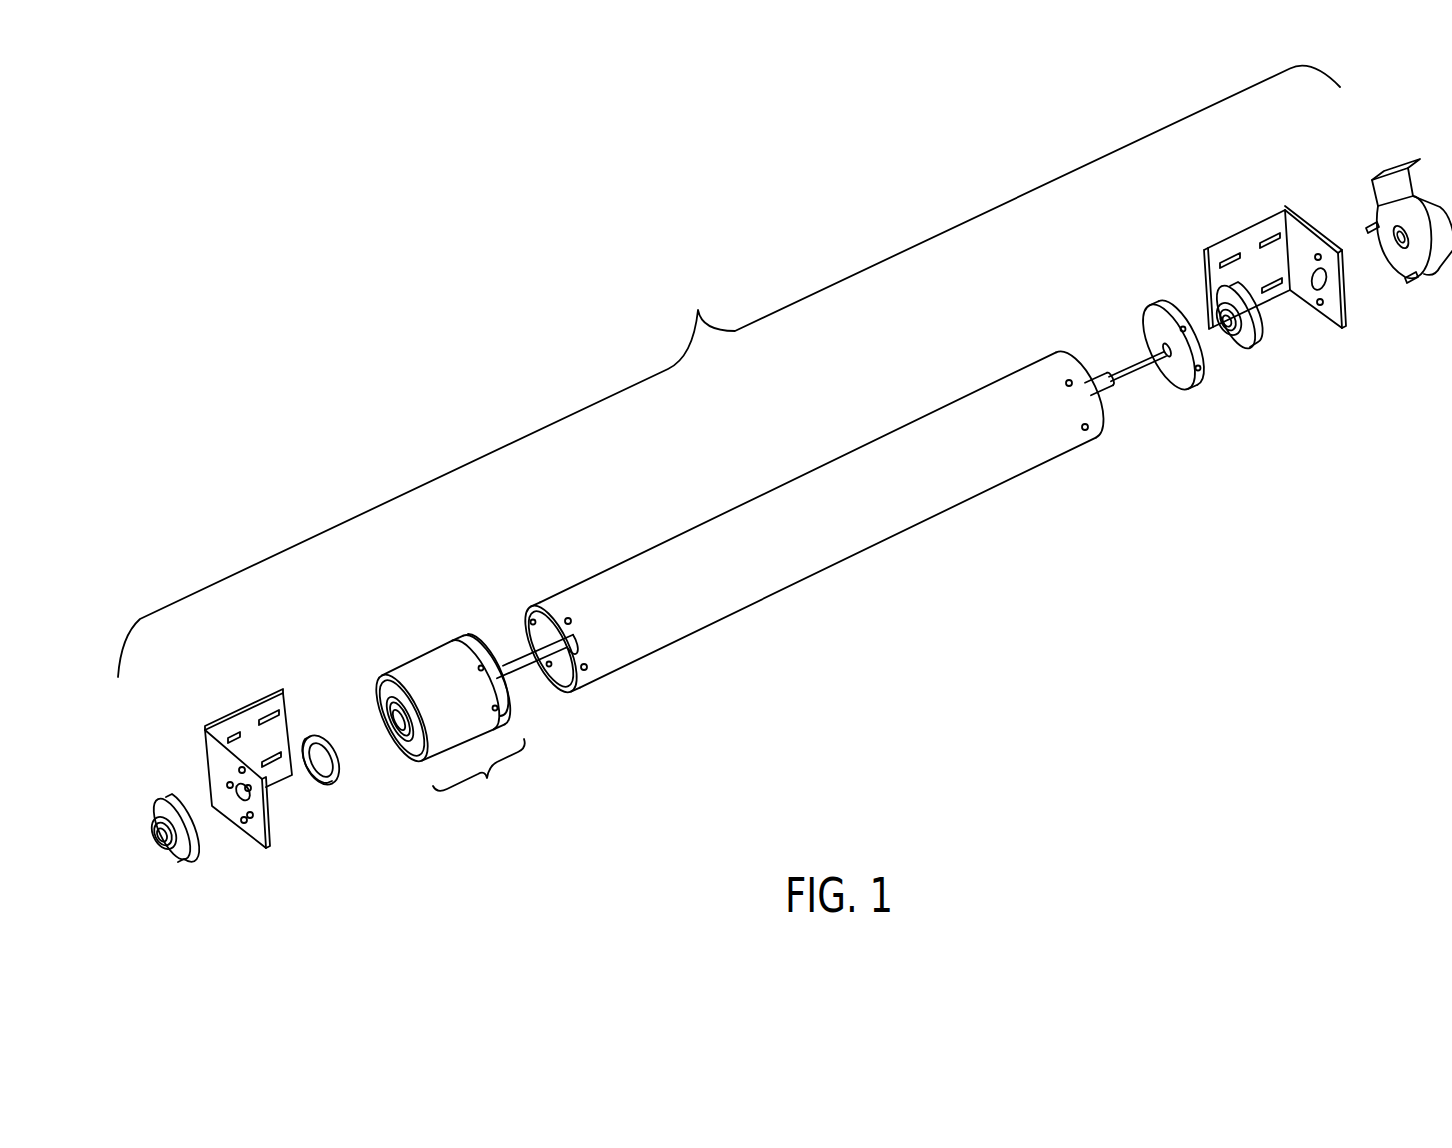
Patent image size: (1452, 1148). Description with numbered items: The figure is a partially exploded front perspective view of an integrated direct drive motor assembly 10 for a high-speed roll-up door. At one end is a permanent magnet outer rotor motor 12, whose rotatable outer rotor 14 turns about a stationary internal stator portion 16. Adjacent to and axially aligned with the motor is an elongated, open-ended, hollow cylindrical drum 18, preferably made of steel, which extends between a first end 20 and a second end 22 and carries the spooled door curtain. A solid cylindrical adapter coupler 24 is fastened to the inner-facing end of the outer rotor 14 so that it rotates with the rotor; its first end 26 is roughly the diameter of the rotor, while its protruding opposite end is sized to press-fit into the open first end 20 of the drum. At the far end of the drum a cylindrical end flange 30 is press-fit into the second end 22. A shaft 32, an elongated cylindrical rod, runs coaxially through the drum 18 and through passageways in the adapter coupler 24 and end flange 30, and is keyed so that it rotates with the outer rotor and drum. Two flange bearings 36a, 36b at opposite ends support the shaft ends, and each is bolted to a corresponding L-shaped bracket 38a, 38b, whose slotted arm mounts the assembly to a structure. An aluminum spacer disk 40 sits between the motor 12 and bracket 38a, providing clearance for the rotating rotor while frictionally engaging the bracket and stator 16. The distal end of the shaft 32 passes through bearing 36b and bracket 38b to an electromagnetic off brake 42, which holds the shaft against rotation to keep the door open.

The integrated direct drive motor assembly 10 is at (729, 371).
The permanent magnet outer rotor motor 12 is at (430, 674).
The outer rotor 14 is at (479, 777).
The stator portion 16 is at (400, 713).
The drum 18 is at (770, 517).
The first end 20 is at (598, 681).
The second end 22 is at (1088, 444).
The adapter coupler 24 is at (470, 653).
The first end 26 is at (478, 645).
The end flange 30 is at (1198, 394).
The shaft 32 is at (517, 669).
The flange bearing 36a is at (185, 862).
The flange bearing 36b is at (1253, 356).
The L-shaped bracket 38a is at (249, 726).
The L-shaped bracket 38b is at (1250, 245).
The spacer disk 40 is at (332, 786).
The electromagnetic off brake 42 is at (1398, 190).